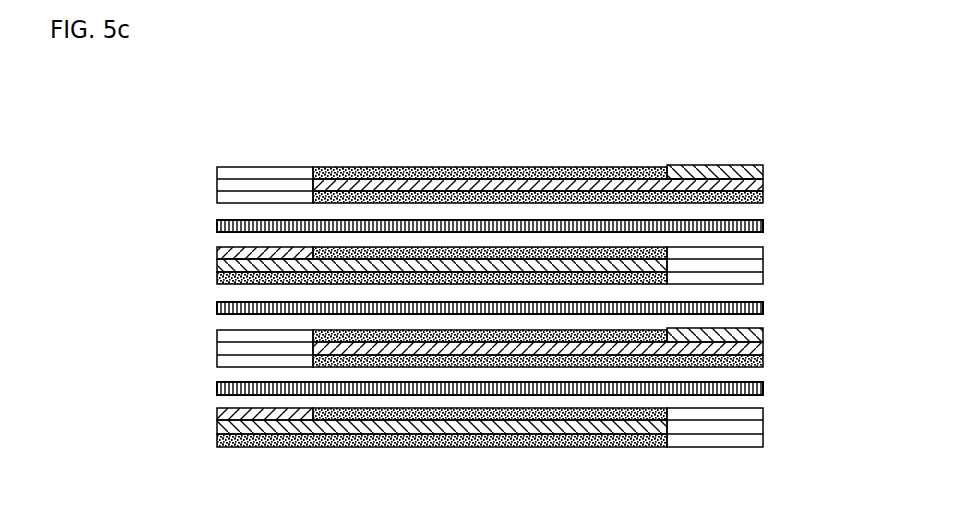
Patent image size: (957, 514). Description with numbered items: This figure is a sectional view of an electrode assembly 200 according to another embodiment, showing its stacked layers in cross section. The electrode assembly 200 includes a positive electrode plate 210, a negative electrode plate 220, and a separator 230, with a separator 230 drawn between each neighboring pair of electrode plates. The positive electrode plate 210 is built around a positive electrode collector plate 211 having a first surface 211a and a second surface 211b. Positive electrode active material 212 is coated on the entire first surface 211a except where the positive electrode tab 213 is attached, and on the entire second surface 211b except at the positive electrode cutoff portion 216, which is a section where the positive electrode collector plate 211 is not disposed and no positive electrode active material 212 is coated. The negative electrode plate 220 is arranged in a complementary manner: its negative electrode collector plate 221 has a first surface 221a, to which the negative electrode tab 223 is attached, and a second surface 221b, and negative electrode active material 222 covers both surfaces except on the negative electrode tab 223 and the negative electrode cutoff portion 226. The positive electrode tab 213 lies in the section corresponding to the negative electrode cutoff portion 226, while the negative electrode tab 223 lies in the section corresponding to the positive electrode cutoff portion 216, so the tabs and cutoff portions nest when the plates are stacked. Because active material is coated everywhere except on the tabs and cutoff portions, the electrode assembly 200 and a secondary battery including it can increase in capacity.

The electrode assembly 200 is at (797, 131).
The positive electrode plate 210 is at (767, 183).
The positive electrode collector plate 211 is at (316, 167).
The first surface of the positive electrode collector plate 211a is at (378, 167).
The second surface of the positive electrode collector plate 211b is at (470, 167).
The positive electrode active material 212 is at (557, 167).
The positive electrode tab 213 is at (704, 165).
The positive electrode cutoff portion 216 is at (220, 184).
The negative electrode plate 220 is at (767, 266).
The negative electrode collector plate 221 is at (325, 266).
The first surface of the negative electrode collector plate 221a is at (380, 262).
The second surface of the negative electrode collector plate 221b is at (467, 262).
The negative electrode active material 222 is at (600, 277).
The negative electrode tab 223 is at (217, 253).
The negative electrode cutoff portion 226 is at (703, 278).
The separator 230 is at (767, 226).